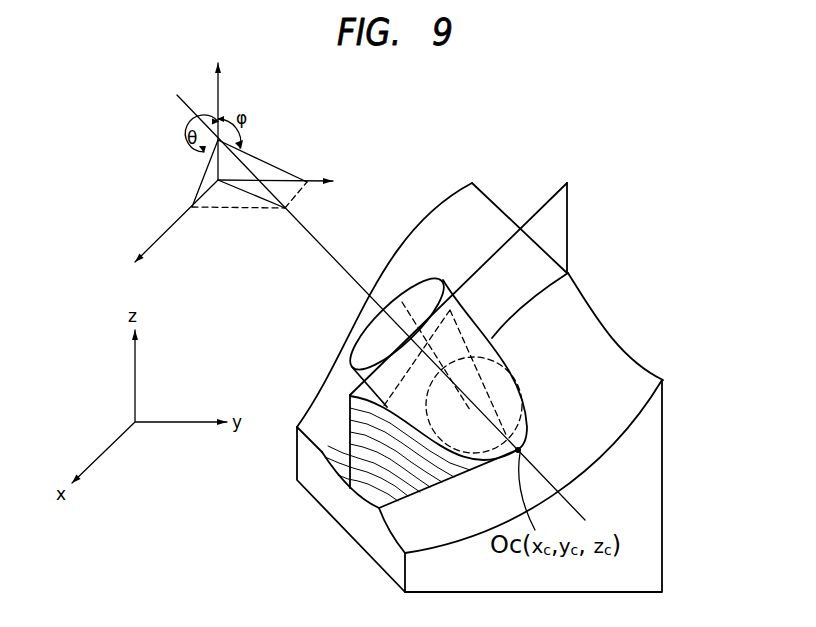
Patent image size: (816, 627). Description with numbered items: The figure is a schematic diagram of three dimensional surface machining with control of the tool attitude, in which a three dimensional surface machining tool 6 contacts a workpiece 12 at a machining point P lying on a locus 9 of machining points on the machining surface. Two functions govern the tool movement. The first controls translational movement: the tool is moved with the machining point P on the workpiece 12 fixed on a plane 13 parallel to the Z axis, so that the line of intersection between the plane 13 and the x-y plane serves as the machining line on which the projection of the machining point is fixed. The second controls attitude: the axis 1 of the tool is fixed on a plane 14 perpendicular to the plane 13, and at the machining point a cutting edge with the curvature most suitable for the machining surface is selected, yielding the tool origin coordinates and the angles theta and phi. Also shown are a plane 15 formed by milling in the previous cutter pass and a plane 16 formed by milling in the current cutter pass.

The axis of the tool 1 is at (337, 260).
The three dimensional surface machining tool 6 is at (515, 373).
The locus of machining points 9 is at (426, 450).
The workpiece 12 is at (645, 568).
The plane parallel to the Z axis 13 is at (553, 222).
The plane perpendicular to the plane 13 14 is at (387, 298).
The plane formed by milling in the previous cutter pass 15 is at (405, 528).
The plane formed by milling in the current cutter pass 16 is at (342, 468).